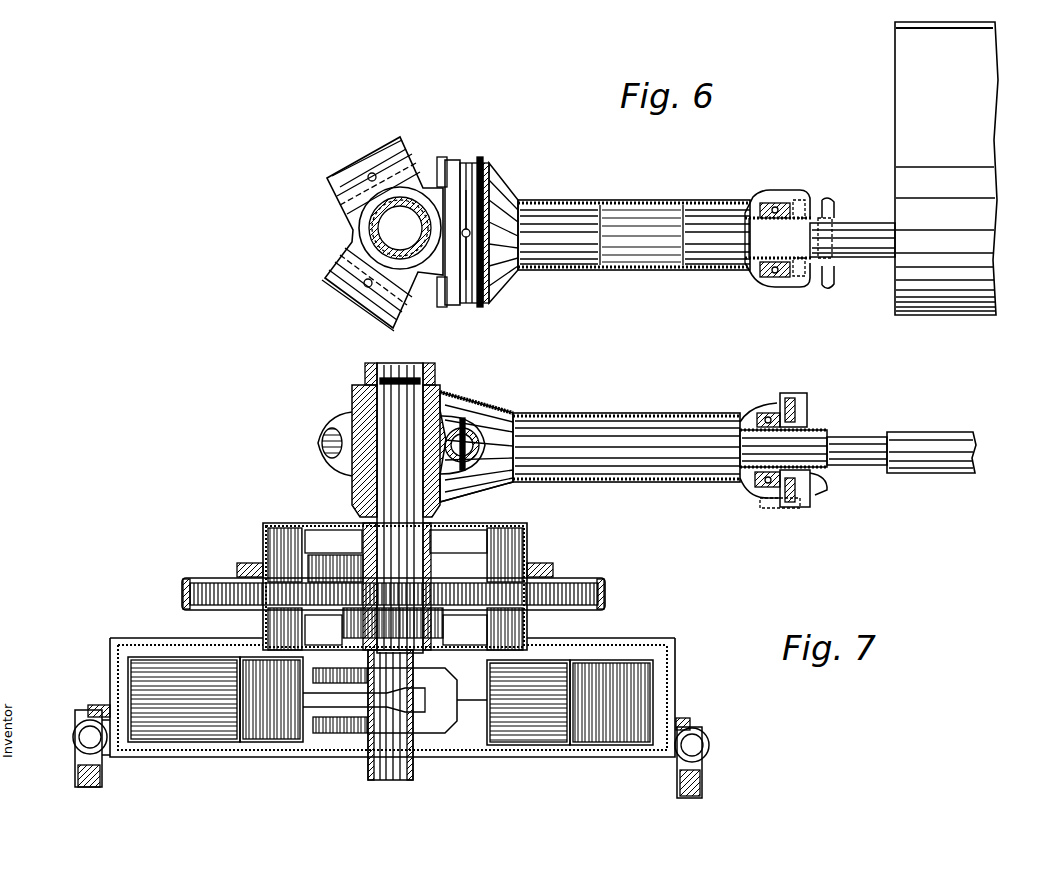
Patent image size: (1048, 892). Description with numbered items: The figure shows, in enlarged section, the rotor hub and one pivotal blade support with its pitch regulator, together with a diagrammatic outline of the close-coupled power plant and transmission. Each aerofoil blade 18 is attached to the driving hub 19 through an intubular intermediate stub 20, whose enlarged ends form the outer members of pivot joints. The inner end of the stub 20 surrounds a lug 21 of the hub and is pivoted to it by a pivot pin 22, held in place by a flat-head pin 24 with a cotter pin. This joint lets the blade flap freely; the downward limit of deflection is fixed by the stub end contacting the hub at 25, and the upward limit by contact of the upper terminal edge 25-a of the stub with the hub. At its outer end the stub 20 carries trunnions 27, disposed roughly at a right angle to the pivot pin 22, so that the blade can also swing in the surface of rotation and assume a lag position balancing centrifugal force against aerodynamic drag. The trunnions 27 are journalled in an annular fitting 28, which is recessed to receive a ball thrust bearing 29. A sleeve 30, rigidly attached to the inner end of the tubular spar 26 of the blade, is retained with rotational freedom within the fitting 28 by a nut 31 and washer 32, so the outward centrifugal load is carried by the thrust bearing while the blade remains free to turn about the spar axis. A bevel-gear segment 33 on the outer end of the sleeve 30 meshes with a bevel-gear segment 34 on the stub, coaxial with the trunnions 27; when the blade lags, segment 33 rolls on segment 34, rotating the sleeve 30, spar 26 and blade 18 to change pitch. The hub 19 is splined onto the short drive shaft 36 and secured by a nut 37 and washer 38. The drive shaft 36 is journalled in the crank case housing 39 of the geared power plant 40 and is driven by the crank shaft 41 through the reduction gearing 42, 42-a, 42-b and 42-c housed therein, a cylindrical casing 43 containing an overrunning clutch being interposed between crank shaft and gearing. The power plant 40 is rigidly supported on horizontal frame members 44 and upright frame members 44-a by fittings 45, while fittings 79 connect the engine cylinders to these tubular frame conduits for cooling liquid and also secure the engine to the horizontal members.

In FIG. 6, the aerofoil blade 18 is at (960, 130).
In FIG. 7, the aerofoil blade 18 is at (925, 445).
In FIG. 6, the driving hub 19 is at (418, 190).
In FIG. 7, the driving hub 19 is at (360, 395).
In FIG. 6, the stub 20 is at (660, 270).
In FIG. 6, the lug 21 is at (362, 172).
In FIG. 7, the lug 21 is at (330, 435).
In FIG. 6, the pivot pin 22 is at (470, 205).
In FIG. 7, the pivot pin 22 is at (525, 450).
In FIG. 6, the flat-head pin 24 is at (511, 190).
In FIG. 7, the flat-head pin 24 is at (505, 400).
In FIG. 7, the stub end contact 25 is at (470, 504).
In FIG. 7, the upper terminal edge of stub 25-a is at (467, 416).
In FIG. 6, the tubular spar 26 is at (855, 226).
In FIG. 7, the tubular spar 26 is at (866, 468).
In FIG. 7, the trunnion 27 is at (810, 414).
In FIG. 6, the annular fitting 28 is at (800, 205).
In FIG. 7, the ball thrust bearing 29 is at (787, 410).
In FIG. 6, the sleeve 30 is at (788, 278).
In FIG. 7, the sleeve 30 is at (758, 408).
In FIG. 6, the nut 31 is at (752, 200).
In FIG. 6, the washer 32 is at (772, 195).
In FIG. 6, the bevel-gear segment 33 is at (831, 278).
In FIG. 7, the bevel-gear segment 33 is at (818, 483).
In FIG. 6, the bevel-gear segment 34 is at (822, 212).
In FIG. 7, the bevel-gear segment 34 is at (805, 508).
In FIG. 6, the drive shaft 36 is at (378, 240).
In FIG. 7, the drive shaft 36 is at (412, 378).
In FIG. 7, the nut 37 is at (375, 368).
In FIG. 7, the washer 38 is at (436, 370).
In FIG. 7, the housing 39 is at (326, 522).
In FIG. 7, the geared power plant 40 is at (395, 659).
In FIG. 7, the crank shaft 41 is at (372, 742).
In FIG. 7, the reduction gearing 42 is at (400, 600).
In FIG. 7, the reduction gear 42-a is at (205, 597).
In FIG. 7, the reduction gear 42-b is at (276, 567).
In FIG. 7, the reduction gear 42-c is at (348, 572).
In FIG. 7, the cylindrical casing 43 is at (367, 628).
In FIG. 7, the horizontal frame member 44 is at (86, 720).
In FIG. 7, the upright frame member 44-a is at (105, 779).
In FIG. 7, the fitting 45 is at (99, 705).
In FIG. 7, the fitting 79 is at (703, 738).